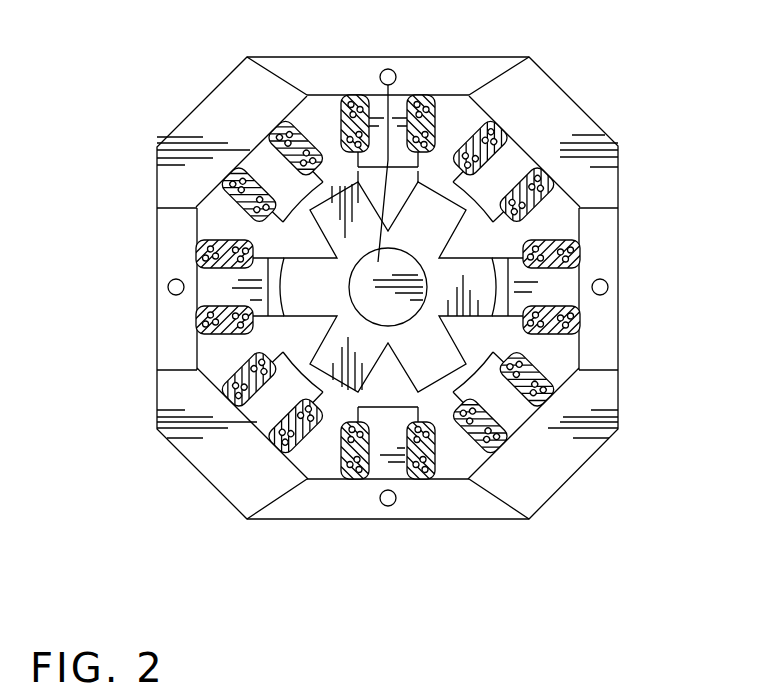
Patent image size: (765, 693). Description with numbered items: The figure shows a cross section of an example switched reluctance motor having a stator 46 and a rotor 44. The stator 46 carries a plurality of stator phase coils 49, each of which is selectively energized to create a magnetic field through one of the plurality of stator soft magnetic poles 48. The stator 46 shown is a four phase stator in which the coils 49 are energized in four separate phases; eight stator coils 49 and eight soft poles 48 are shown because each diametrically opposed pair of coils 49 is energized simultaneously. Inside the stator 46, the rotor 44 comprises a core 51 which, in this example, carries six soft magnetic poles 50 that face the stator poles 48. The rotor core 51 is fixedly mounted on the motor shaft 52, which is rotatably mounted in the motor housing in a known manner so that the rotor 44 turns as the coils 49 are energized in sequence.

The rotor 44 is at (468, 372).
The stator 46 is at (637, 185).
The stator soft magnetic pole 48 is at (278, 182).
The stator phase coil 49 is at (273, 132).
The soft magnetic pole 50 is at (333, 233).
The core 51 is at (352, 320).
The motor shaft 52 is at (388, 69).